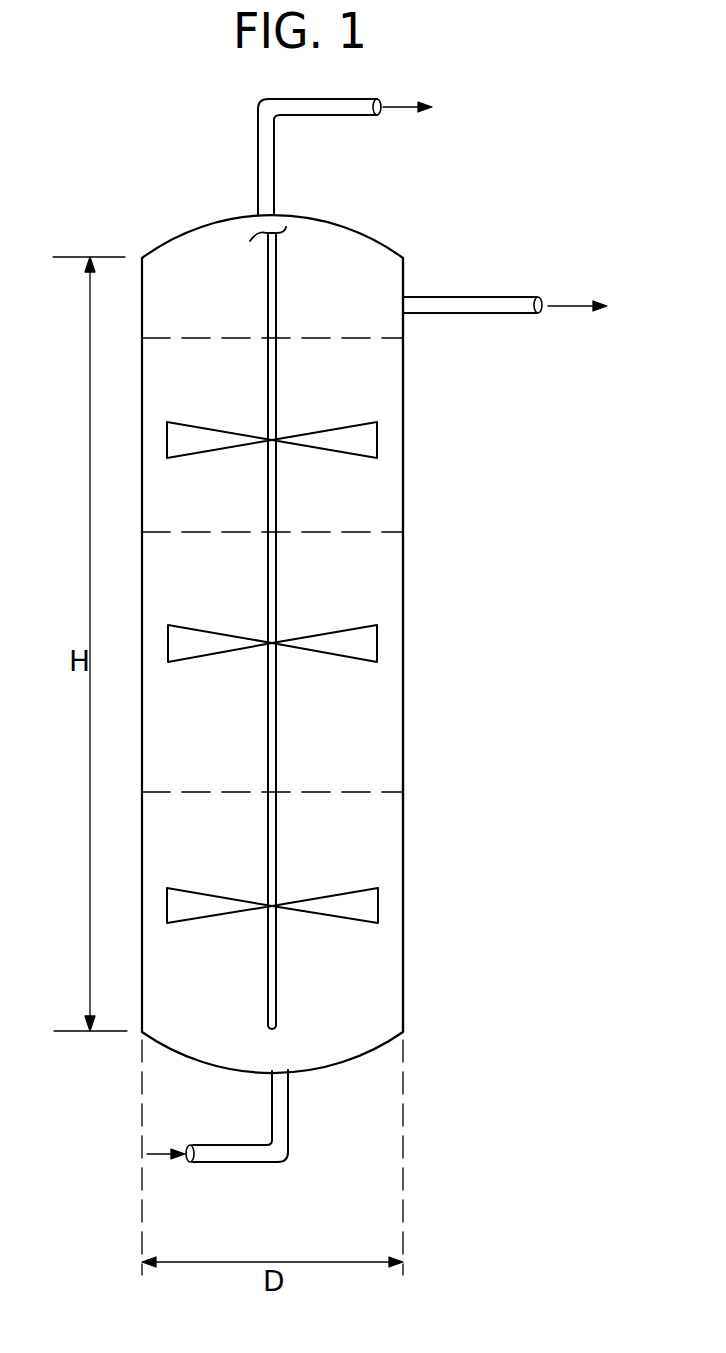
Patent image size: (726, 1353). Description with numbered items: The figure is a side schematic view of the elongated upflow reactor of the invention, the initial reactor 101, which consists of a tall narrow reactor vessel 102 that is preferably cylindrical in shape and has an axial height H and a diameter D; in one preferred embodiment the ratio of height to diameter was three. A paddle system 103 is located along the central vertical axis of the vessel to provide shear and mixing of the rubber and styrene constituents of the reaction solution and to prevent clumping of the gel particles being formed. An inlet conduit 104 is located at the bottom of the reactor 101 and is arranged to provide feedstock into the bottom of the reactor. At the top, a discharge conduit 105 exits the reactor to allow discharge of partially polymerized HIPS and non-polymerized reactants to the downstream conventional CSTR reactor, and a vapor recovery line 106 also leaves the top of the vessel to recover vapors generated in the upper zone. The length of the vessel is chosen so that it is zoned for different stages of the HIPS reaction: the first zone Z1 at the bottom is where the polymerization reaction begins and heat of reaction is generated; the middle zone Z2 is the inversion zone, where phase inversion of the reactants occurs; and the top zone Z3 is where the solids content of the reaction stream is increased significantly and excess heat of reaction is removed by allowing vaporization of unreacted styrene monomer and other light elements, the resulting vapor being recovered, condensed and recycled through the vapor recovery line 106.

The initial reactor 101 is at (413, 687).
The reactor vessel 102 is at (403, 888).
The paddle system 103 is at (278, 748).
The inlet conduit 104 is at (280, 1148).
The discharge conduit 105 is at (505, 289).
The vapor recovery line 106 is at (345, 143).
The first zone Z1 is at (320, 956).
The middle zone Z2 is at (320, 692).
The top zone Z3 is at (320, 421).